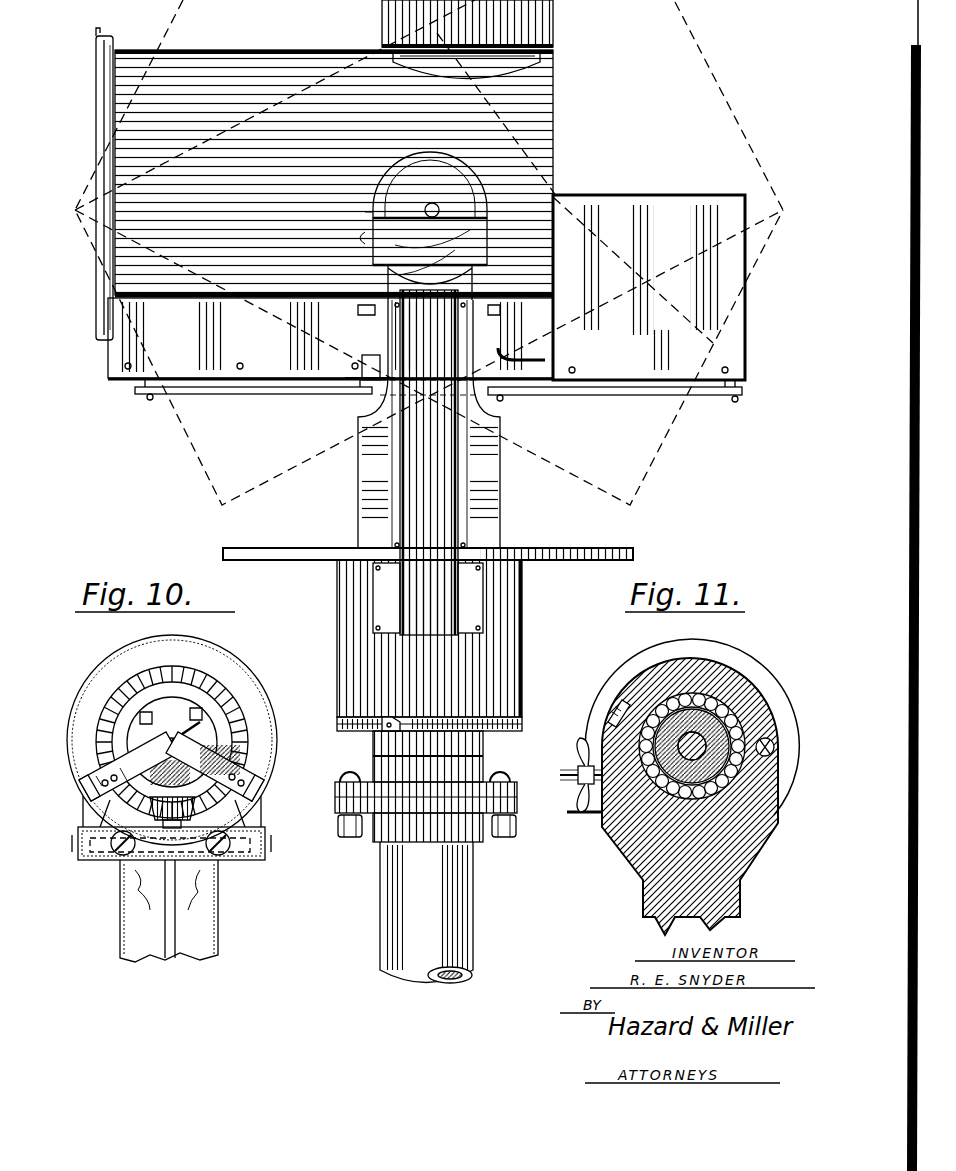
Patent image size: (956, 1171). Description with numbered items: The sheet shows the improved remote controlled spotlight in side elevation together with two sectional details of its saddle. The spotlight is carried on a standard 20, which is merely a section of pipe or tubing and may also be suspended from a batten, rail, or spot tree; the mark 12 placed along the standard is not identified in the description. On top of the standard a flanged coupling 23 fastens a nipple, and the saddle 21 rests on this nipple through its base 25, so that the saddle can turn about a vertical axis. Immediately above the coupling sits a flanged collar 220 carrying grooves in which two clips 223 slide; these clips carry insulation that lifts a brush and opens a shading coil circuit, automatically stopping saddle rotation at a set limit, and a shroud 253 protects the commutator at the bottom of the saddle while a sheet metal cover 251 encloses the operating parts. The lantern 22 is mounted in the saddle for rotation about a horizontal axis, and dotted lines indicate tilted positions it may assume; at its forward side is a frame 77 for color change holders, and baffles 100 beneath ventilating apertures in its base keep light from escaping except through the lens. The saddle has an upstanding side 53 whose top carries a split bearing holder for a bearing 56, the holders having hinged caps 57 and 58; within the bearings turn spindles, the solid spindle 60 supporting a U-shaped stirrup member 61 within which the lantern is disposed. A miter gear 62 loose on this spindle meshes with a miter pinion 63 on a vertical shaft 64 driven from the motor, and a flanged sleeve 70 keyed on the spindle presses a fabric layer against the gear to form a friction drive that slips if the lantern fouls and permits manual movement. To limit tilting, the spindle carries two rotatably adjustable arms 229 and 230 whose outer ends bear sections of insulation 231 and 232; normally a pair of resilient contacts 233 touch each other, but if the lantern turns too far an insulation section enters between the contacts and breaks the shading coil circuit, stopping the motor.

In FIG. 1, the axis / dimension line 12 is at (432, 133).
In FIG. 1, the standard 20 is at (405, 932).
In FIG. 1, the saddle 21 is at (366, 517).
In FIG. 1, the lantern 22 is at (245, 75).
In FIG. 1, the flanged coupling 23 is at (500, 785).
In FIG. 1, the base 25 is at (622, 550).
In FIG. 1, the upstanding side 53 is at (480, 473).
In FIG. 11, the bearing 56 is at (740, 730).
In FIG. 1, the hinged cap 57 is at (475, 188).
In FIG. 11, the hinged cap 58 is at (735, 700).
In FIG. 11, the spindle 60 is at (640, 828).
In FIG. 1, the U-shaped stirrup member 61 is at (377, 365).
In FIG. 10, the miter gear 62 is at (228, 713).
In FIG. 10, the miter pinion 63 is at (210, 812).
In FIG. 10, the vertical shaft 64 is at (170, 925).
In FIG. 10, the flanged sleeve 70 is at (185, 705).
In FIG. 1, the frame 77 is at (97, 353).
In FIG. 1, the baffles 100 is at (258, 392).
In FIG. 1, the flanged collar 220 is at (523, 727).
In FIG. 1, the clip 223 is at (382, 733).
In FIG. 10, the arm 229 is at (235, 775).
In FIG. 10, the arm 230 is at (118, 750).
In FIG. 10, the section of insulation 231 is at (258, 787).
In FIG. 10, the section of insulation 232 is at (90, 792).
In FIG. 10, the resilient contacts 233 is at (112, 850).
In FIG. 1, the sheet metal cover 251 is at (440, 518).
In FIG. 1, the shroud 253 is at (535, 28).